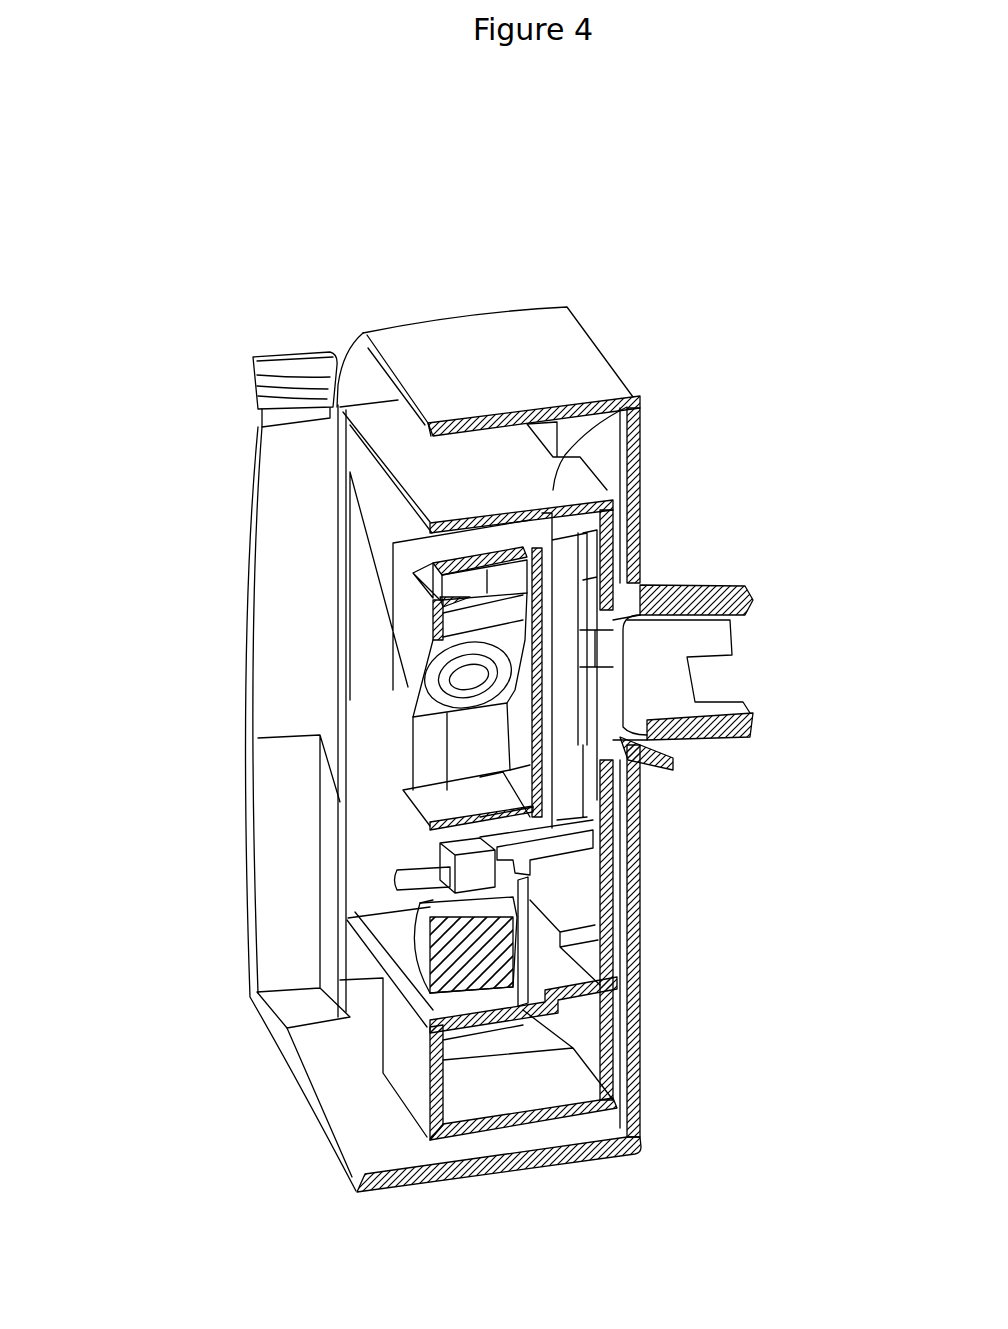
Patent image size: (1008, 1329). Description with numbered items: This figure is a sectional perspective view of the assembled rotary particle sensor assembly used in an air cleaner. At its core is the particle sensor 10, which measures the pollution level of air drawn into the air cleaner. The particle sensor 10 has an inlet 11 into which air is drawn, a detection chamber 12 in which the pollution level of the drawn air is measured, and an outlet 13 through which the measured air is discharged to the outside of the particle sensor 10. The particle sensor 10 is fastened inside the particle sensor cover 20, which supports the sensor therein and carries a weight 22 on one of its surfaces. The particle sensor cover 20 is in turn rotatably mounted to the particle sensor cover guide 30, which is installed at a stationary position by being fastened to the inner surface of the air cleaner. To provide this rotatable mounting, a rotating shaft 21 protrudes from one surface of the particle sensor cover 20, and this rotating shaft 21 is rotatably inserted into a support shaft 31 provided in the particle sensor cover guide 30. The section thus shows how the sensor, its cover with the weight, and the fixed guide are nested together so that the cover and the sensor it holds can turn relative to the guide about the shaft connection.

The particle sensor 10 is at (95, 606).
The inlet 11 is at (445, 790).
The detection chamber 12 is at (480, 728).
The outlet 13 is at (455, 590).
The particle sensor cover 20 is at (638, 402).
The rotating shaft 21 is at (753, 607).
The weight 22 is at (415, 1097).
The particle sensor cover guide 30 is at (560, 327).
The support shaft 31 is at (707, 587).